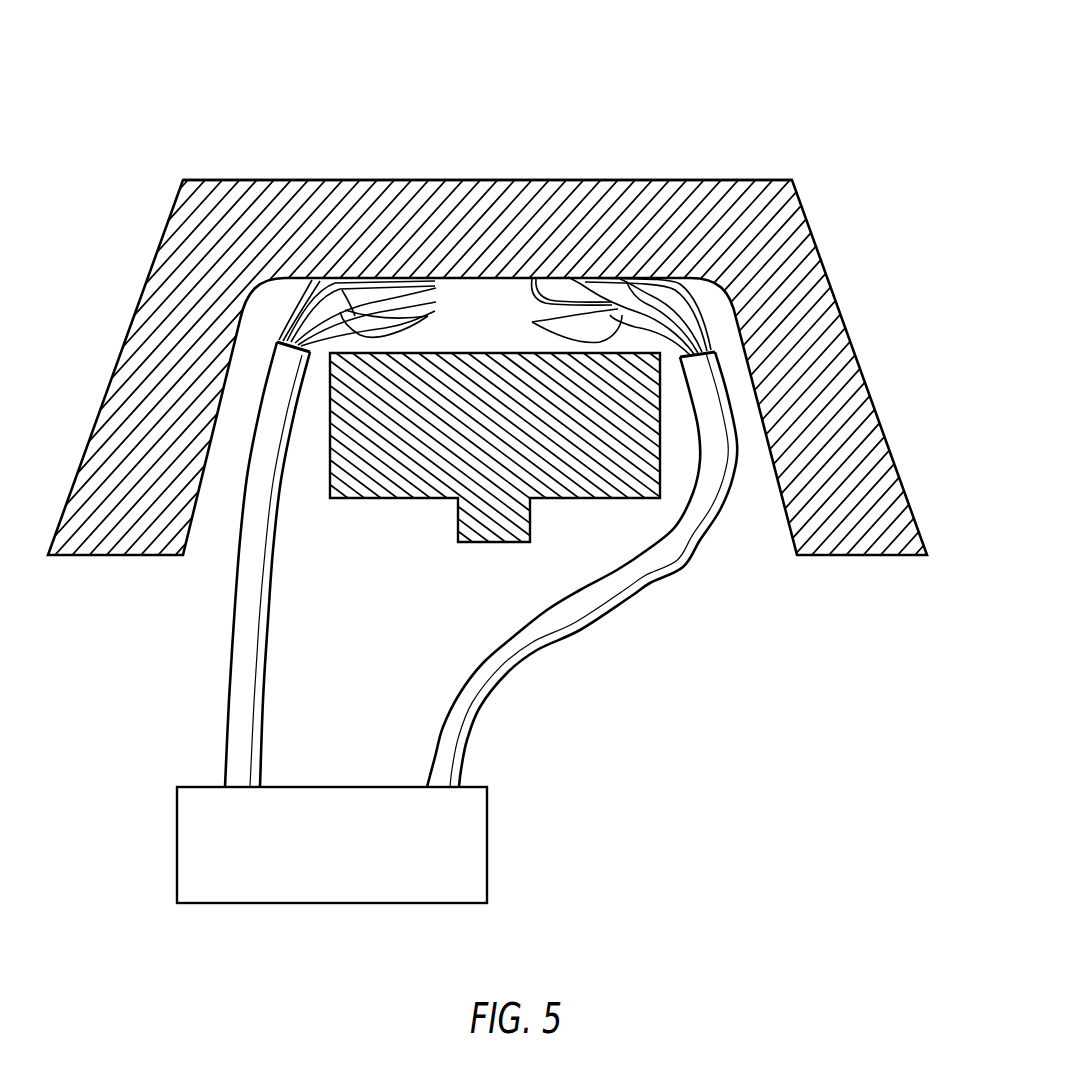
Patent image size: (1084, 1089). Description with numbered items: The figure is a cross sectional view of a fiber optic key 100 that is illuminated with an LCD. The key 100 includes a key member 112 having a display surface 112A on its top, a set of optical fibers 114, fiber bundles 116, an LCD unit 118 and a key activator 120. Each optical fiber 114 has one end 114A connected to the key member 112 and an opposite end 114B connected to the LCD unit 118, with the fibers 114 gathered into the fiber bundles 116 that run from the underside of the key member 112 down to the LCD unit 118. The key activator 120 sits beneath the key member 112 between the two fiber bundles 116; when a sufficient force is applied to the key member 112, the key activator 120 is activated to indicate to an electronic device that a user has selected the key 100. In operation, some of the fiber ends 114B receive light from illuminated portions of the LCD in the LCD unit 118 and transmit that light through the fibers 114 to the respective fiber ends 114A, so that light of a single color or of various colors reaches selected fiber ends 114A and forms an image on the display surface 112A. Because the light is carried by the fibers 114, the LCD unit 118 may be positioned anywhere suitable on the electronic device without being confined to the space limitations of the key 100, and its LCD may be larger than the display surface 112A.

The key 100 is at (570, 72).
The key member 112 is at (350, 203).
The display surface 112A is at (547, 170).
The optical fibers 114 is at (495, 316).
The fiber end 114A is at (318, 283).
The fiber end 114B is at (223, 783).
The fiber bundles 116 is at (230, 628).
The LCD unit 118 is at (488, 875).
The key activator 120 is at (437, 478).